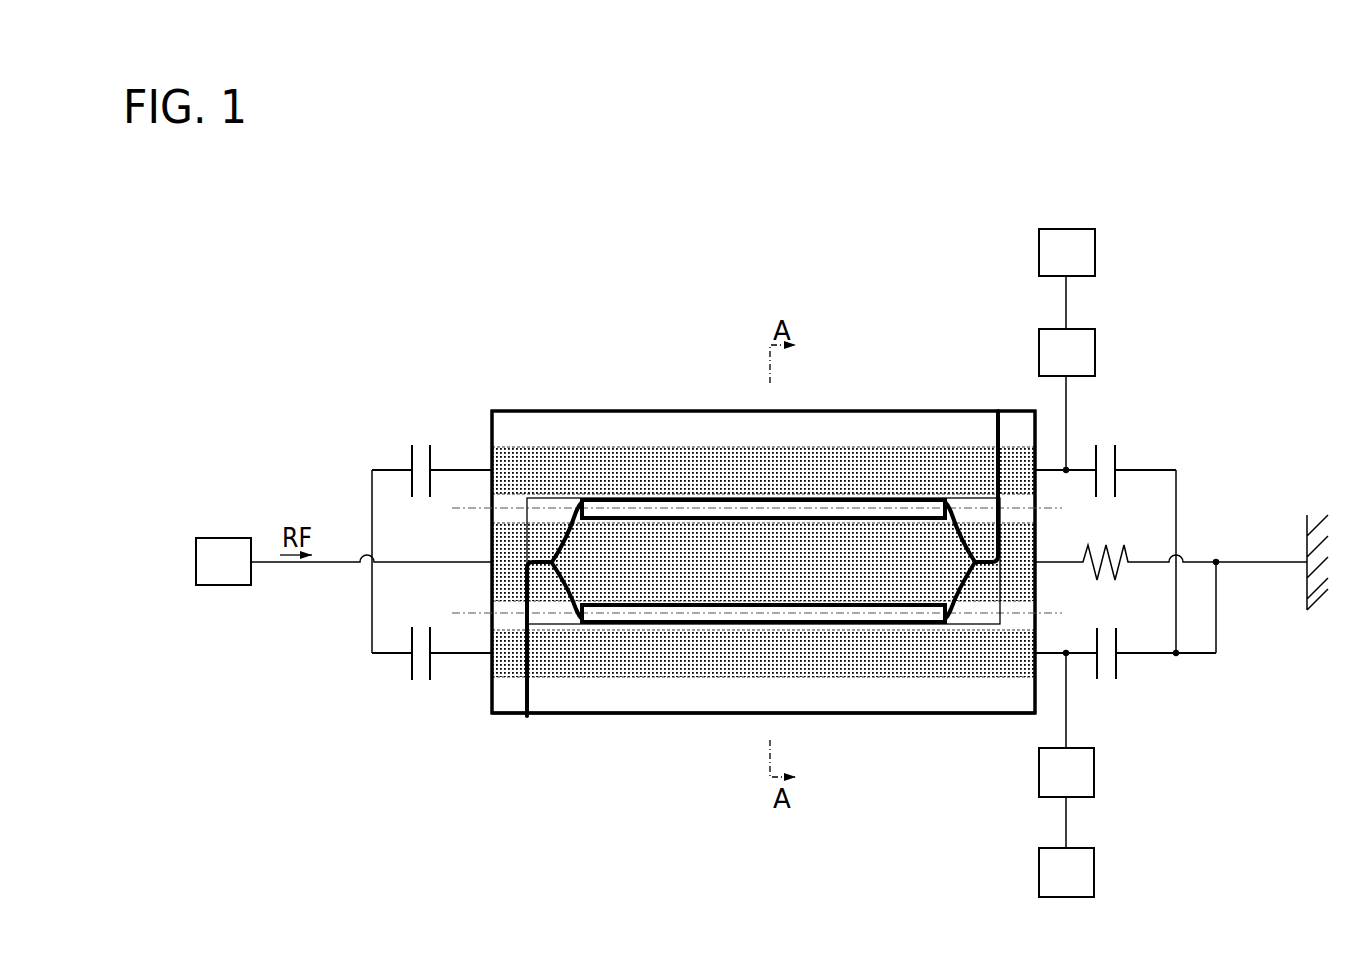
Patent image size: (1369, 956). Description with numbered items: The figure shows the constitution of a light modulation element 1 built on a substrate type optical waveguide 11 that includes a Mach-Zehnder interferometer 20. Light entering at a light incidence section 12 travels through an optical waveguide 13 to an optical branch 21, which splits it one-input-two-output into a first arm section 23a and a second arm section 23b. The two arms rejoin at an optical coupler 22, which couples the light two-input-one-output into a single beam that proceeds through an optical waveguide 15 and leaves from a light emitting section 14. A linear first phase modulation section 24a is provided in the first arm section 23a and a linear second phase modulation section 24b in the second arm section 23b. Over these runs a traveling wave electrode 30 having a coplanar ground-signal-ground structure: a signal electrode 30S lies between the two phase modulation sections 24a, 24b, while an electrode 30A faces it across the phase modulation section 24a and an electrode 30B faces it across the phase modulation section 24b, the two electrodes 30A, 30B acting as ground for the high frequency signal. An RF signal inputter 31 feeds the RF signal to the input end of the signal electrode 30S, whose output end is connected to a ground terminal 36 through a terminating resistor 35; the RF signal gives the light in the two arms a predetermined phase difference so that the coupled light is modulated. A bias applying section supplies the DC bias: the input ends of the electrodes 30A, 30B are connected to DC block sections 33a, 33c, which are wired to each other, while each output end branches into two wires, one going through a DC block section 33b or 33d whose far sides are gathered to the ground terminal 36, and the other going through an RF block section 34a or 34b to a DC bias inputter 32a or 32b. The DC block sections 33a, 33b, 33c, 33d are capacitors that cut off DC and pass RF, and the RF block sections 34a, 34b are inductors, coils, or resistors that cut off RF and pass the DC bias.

The light modulation element 1 is at (511, 252).
The substrate type optical waveguide 11 is at (548, 420).
The light incidence section 12 is at (527, 714).
The optical waveguide 13 is at (512, 694).
The light emitting section 14 is at (997, 408).
The optical waveguide 15 is at (996, 433).
The Mach-Zehnder interferometer 20 is at (953, 626).
The optical branch 21 is at (558, 566).
The optical coupler 22 is at (968, 557).
The first arm section 23a is at (553, 562).
The second arm section 23b is at (553, 564).
The first phase modulation section 24a is at (757, 506).
The second phase modulation section 24b is at (749, 617).
The traveling wave electrode 30 is at (763, 675).
The electrode 30A is at (857, 477).
The signal electrode 30S is at (830, 566).
The electrode 30B is at (797, 653).
The RF signal inputter 31 is at (223, 561).
The DC bias inputter 32a is at (1067, 252).
The DC bias inputter 32b is at (1066, 872).
The DC block section 33a is at (417, 437).
The DC block section 33b is at (1106, 436).
The DC block section 33c is at (417, 688).
The DC block section 33d is at (1108, 688).
The RF block section 34a is at (1067, 352).
The RF block section 34b is at (1066, 772).
The terminating resistor 35 is at (1114, 528).
The ground terminal 36 is at (1295, 520).